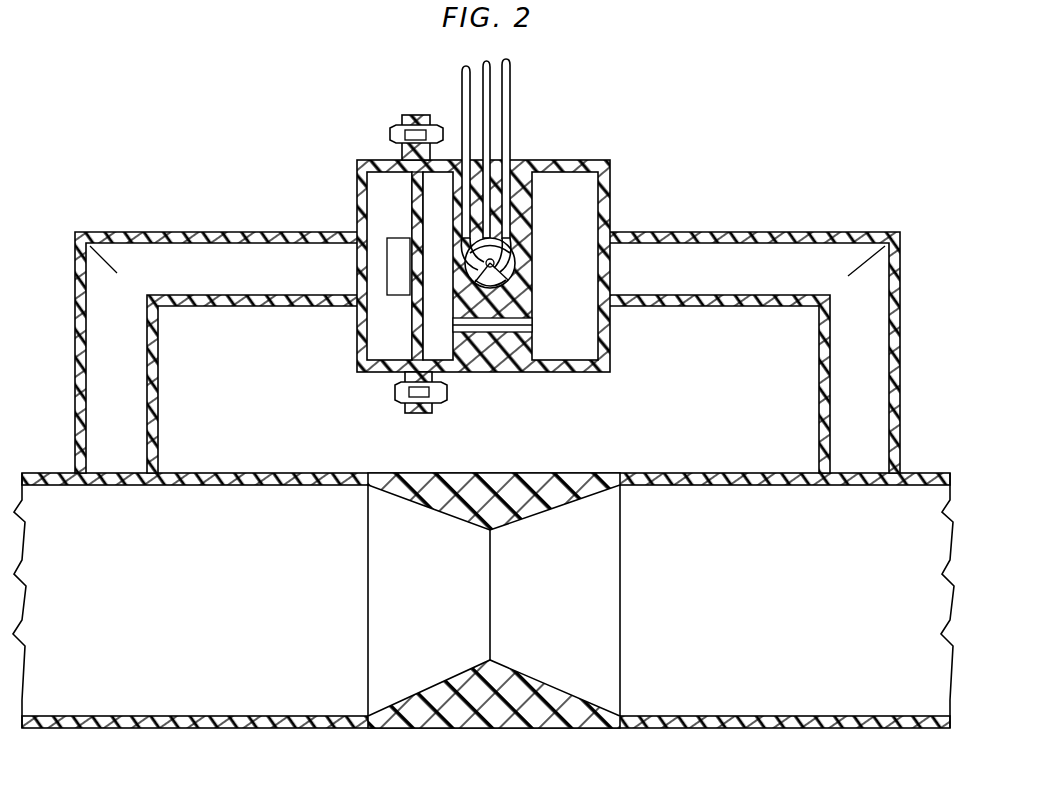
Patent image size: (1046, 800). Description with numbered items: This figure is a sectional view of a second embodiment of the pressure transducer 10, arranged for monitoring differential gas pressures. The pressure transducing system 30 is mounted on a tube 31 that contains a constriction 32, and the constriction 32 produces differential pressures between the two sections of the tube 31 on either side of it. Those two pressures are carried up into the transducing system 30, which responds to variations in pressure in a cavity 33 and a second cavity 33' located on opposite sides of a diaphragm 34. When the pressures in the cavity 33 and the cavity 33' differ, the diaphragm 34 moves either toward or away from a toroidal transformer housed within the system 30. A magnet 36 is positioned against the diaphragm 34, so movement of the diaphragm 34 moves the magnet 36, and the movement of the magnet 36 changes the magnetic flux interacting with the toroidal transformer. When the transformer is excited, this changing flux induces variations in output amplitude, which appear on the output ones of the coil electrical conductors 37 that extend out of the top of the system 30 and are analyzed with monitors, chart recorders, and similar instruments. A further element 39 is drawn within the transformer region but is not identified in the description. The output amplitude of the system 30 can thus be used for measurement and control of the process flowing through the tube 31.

The pressure transducer 10 is at (457, 236).
The pressure transducing system 30 is at (654, 229).
The tube 31 is at (74, 528).
The constriction 32 is at (511, 692).
The cavity 33 is at (358, 262).
The cavity 33' is at (462, 291).
The diaphragm 34 is at (407, 333).
The magnet 36 is at (397, 231).
The coil electrical conductors 37 is at (465, 119).
The rotor sensor 39 is at (522, 260).